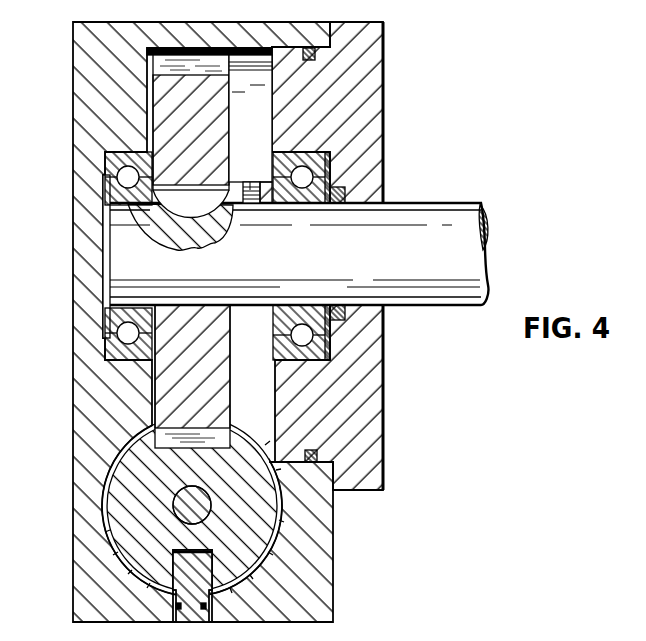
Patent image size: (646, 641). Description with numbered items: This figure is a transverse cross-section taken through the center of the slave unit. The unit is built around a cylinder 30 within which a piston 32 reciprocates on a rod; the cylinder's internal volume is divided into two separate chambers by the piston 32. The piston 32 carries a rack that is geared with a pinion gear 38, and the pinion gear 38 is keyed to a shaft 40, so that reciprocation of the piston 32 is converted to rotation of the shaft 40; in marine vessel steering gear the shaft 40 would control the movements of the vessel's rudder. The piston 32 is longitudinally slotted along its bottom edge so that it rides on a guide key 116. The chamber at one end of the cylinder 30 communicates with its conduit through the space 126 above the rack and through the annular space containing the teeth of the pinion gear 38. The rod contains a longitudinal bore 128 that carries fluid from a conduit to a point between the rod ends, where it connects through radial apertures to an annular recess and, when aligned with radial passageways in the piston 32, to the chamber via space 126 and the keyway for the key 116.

The cylinder 30 is at (73, 435).
The piston 32 is at (258, 533).
The pinion gear 38 is at (218, 360).
The shaft 40 is at (462, 203).
The guide key 116 is at (192, 618).
The space 126 is at (232, 430).
The longitudinal bore 128 is at (203, 498).